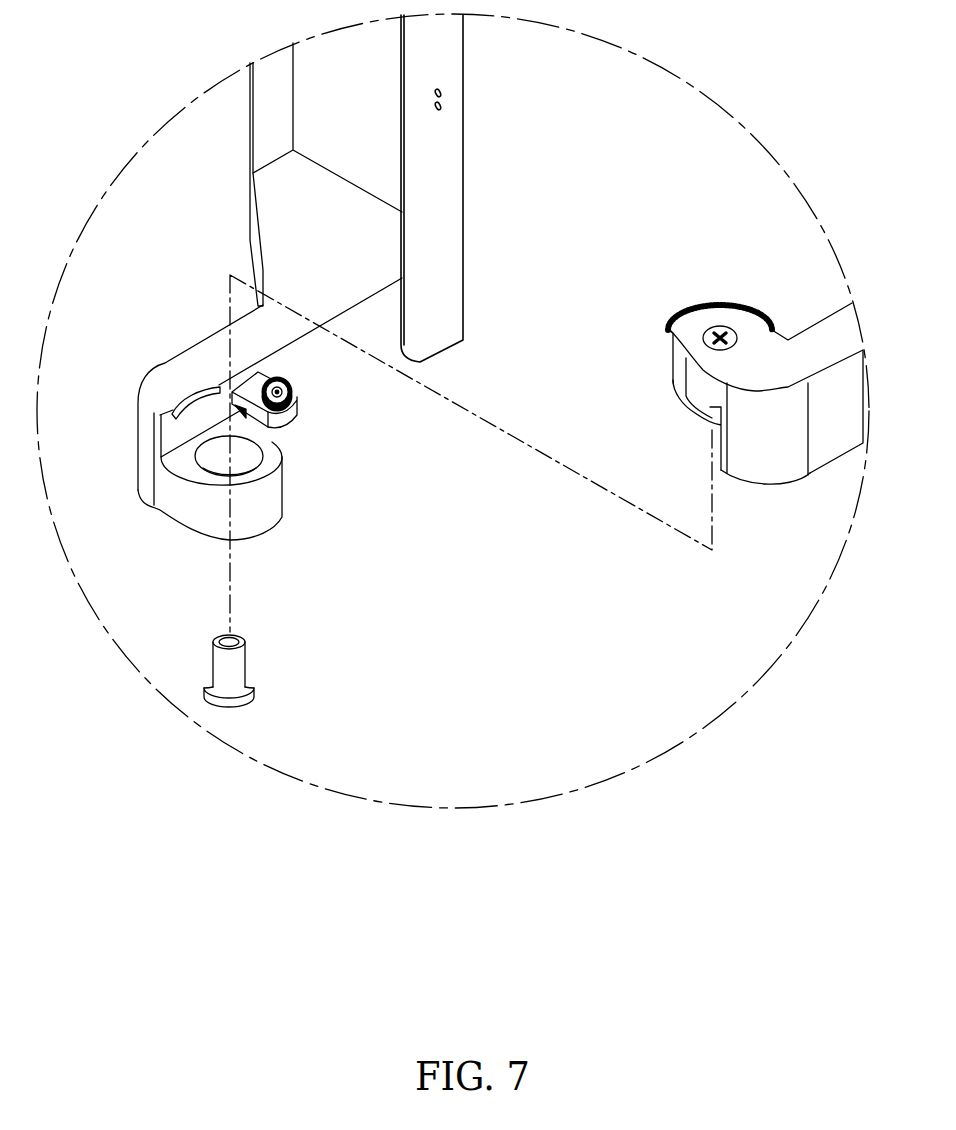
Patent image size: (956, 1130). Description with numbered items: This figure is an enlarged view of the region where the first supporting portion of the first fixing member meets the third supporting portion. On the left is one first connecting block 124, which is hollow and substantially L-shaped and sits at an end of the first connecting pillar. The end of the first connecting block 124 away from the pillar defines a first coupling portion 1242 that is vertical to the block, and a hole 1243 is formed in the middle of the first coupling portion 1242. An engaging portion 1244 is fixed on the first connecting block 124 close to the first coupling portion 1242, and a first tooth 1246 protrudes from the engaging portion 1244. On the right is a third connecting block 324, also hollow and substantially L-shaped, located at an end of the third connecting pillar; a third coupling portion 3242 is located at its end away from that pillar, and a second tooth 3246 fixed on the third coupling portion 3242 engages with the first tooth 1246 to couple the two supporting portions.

The first connecting block 124 is at (223, 341).
The first coupling portion 1242 is at (212, 505).
The hole 1243 is at (218, 448).
The engaging portion 1244 is at (284, 416).
The first tooth 1246 is at (300, 405).
The third connecting block 324 is at (768, 457).
The third coupling portion 3242 is at (705, 388).
The second tooth 3246 is at (713, 317).